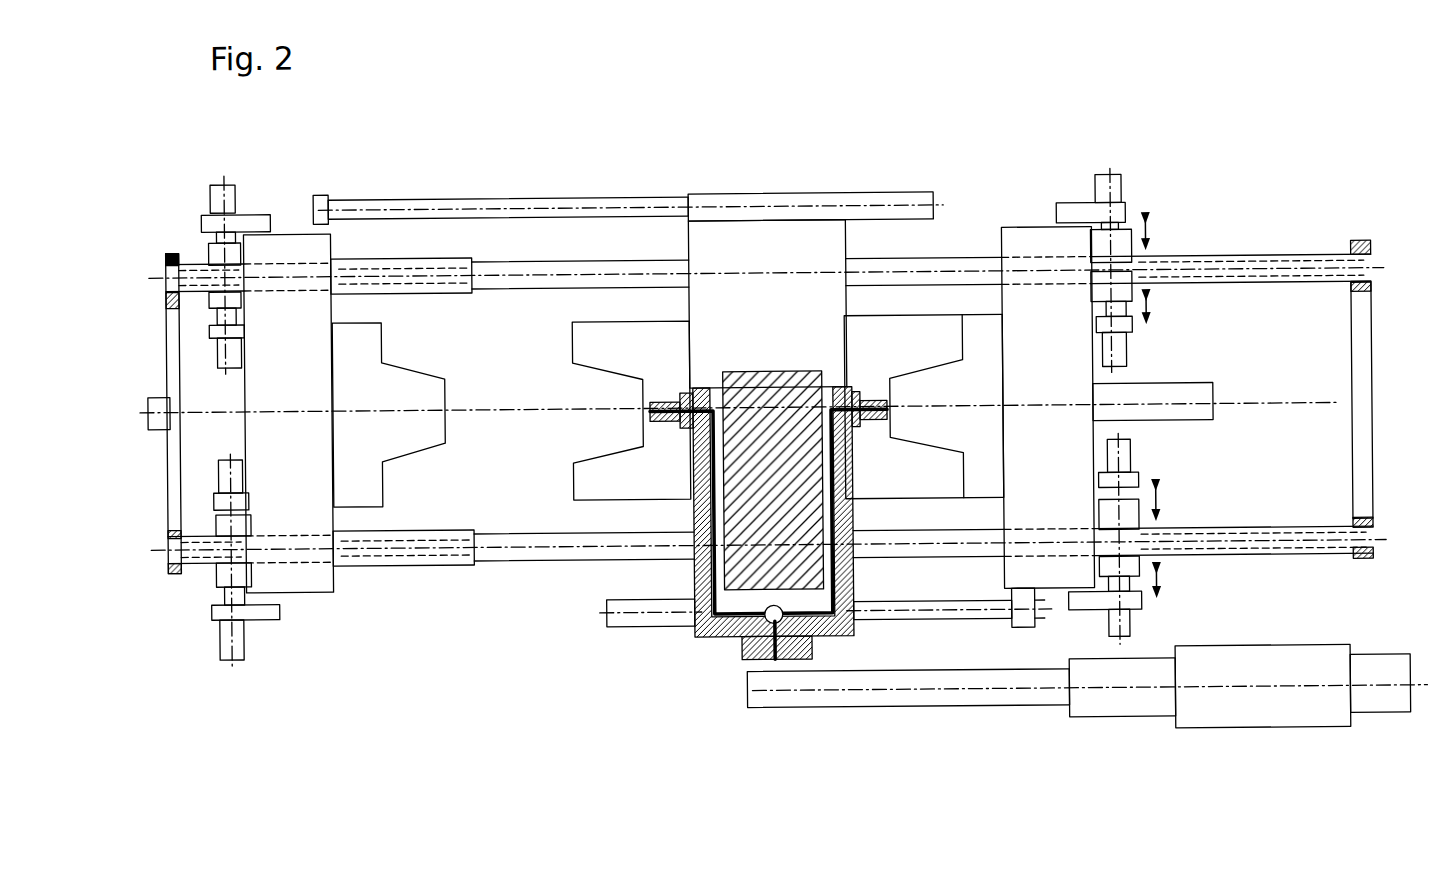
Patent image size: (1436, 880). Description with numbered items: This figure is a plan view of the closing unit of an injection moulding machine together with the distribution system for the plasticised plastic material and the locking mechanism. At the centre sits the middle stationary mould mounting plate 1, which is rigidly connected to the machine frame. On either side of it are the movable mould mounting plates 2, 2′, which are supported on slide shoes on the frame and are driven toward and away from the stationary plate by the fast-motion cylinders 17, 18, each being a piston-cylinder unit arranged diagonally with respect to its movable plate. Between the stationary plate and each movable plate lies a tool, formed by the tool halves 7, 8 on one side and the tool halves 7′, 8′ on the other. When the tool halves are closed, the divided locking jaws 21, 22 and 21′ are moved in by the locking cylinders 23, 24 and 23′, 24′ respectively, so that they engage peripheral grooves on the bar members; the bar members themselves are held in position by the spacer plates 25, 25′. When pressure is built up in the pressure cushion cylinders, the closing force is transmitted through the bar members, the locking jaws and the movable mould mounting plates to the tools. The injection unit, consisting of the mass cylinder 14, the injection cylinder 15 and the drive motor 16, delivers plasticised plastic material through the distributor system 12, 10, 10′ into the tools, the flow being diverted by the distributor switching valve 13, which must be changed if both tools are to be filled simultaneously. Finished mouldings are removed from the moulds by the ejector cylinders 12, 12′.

The middle stationary mould mounting plate 1 is at (735, 252).
The movable mould mounting plate 2 is at (1035, 243).
The movable mould mounting plate 2′ is at (278, 246).
The tool half 7 is at (928, 342).
The tool half 7′ is at (620, 342).
The tool half 8 is at (990, 332).
The tool half 8′ is at (400, 387).
The distributor system 10 is at (853, 599).
The distributor system 10′ is at (690, 572).
The ejector cylinder 12 is at (735, 628).
The ejector cylinder 12′ is at (152, 392).
The distributor switching valve 13 is at (800, 661).
The mass cylinder 14 is at (948, 699).
The injection cylinder 15 is at (1272, 713).
The drive motor 16 is at (1382, 702).
The fast-motion cylinder 17 is at (858, 201).
The fast-motion cylinder 18 is at (668, 620).
The divided locking jaw 21 is at (1122, 251).
The divided locking jaw 21′ is at (220, 253).
The divided locking jaw 22 is at (1125, 301).
The locking cylinder 23 is at (1103, 186).
The locking cylinder 23′ is at (230, 189).
The locking cylinder 24 is at (1098, 752).
The locking cylinder 24′ is at (225, 355).
The spacer plate 25 is at (1363, 351).
The spacer plate 25′ is at (173, 249).